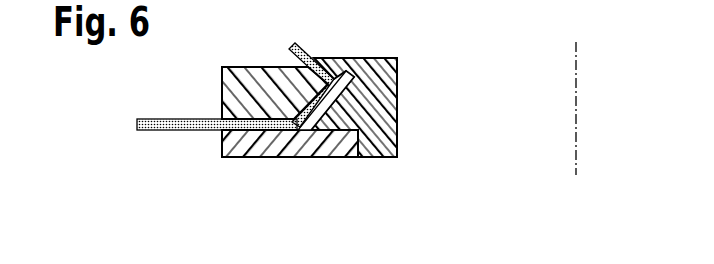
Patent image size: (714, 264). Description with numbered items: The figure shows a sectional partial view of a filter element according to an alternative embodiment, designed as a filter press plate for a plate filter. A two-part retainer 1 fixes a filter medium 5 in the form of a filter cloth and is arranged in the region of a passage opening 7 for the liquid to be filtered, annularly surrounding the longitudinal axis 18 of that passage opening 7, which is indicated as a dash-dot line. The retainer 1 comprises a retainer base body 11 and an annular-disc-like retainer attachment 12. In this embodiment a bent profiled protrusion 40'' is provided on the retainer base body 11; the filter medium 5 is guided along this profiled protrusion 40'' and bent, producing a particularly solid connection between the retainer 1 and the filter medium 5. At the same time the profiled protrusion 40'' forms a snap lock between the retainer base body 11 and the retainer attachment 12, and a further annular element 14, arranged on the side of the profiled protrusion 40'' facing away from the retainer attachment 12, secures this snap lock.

The retainer 1 is at (483, 74).
The filter medium 5 is at (170, 131).
The passage opening 7 is at (507, 120).
The retainer base body 11 is at (253, 146).
The retainer attachment 12 is at (224, 97).
The annular element 14 is at (388, 120).
The longitudinal axis 18 is at (577, 107).
The profiled protrusion 40'' is at (353, 66).